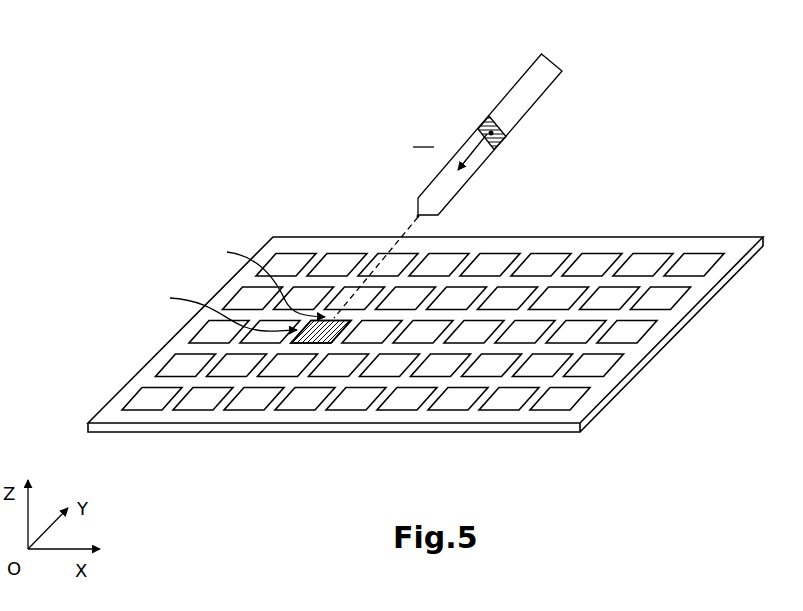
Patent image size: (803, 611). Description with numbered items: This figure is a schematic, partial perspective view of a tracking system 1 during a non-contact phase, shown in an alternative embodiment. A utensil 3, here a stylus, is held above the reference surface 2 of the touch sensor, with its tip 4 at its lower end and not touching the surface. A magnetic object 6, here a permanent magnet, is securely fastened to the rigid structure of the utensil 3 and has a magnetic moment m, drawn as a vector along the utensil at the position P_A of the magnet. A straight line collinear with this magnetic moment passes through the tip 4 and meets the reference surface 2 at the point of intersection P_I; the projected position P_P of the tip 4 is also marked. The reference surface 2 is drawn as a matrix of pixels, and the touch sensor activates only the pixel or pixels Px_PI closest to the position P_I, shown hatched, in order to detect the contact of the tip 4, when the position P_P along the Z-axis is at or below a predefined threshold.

The tracking system 1 is at (127, 110).
The reference surface 2 is at (276, 245).
The utensil 3 is at (565, 72).
The tip 4 is at (428, 218).
The magnetic object 6 is at (479, 115).